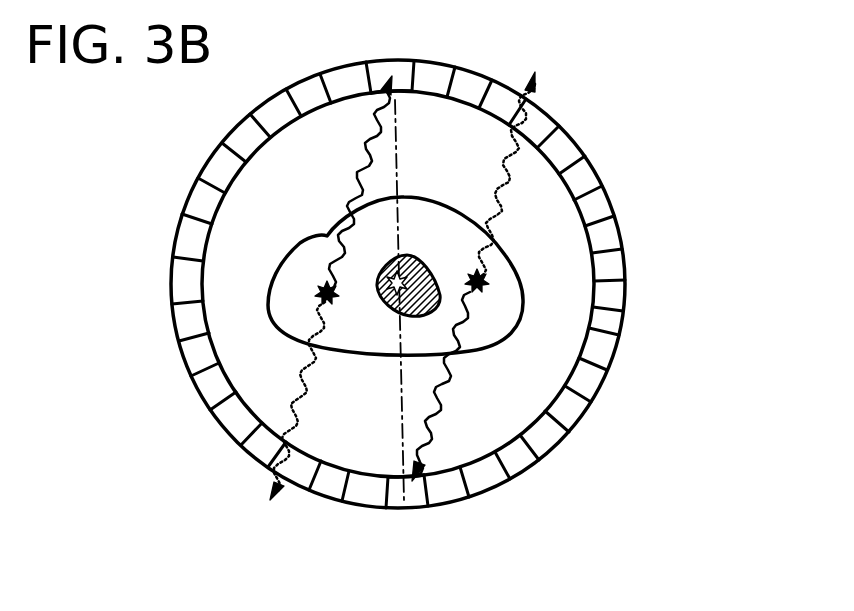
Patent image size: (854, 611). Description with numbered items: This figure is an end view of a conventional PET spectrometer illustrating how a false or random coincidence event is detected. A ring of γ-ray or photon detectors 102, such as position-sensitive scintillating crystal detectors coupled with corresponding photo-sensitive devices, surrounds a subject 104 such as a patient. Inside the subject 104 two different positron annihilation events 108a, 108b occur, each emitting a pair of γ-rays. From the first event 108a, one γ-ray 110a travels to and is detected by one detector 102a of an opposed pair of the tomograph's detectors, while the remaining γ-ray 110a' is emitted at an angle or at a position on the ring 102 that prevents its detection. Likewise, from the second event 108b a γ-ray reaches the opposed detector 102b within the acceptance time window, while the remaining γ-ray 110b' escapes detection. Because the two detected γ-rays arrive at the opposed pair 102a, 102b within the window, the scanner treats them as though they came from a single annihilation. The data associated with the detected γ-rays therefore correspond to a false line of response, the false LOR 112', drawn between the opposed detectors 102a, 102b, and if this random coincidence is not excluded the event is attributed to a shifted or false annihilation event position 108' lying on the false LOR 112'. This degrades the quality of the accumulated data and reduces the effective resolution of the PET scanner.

The ring of detectors 102 is at (183, 165).
The detector of opposed pair 102a is at (397, 78).
The detector of opposed pair 102b is at (403, 503).
The subject 104 is at (497, 306).
The false annihilation event position 108' is at (501, 229).
The positron annihilation event 108a is at (487, 281).
The positron annihilation event 108b is at (320, 294).
The γ-ray 110a is at (206, 183).
The remaining γ-ray 110a' is at (588, 175).
The remaining γ-ray 110b' is at (196, 401).
The false LOR 112' is at (310, 324).